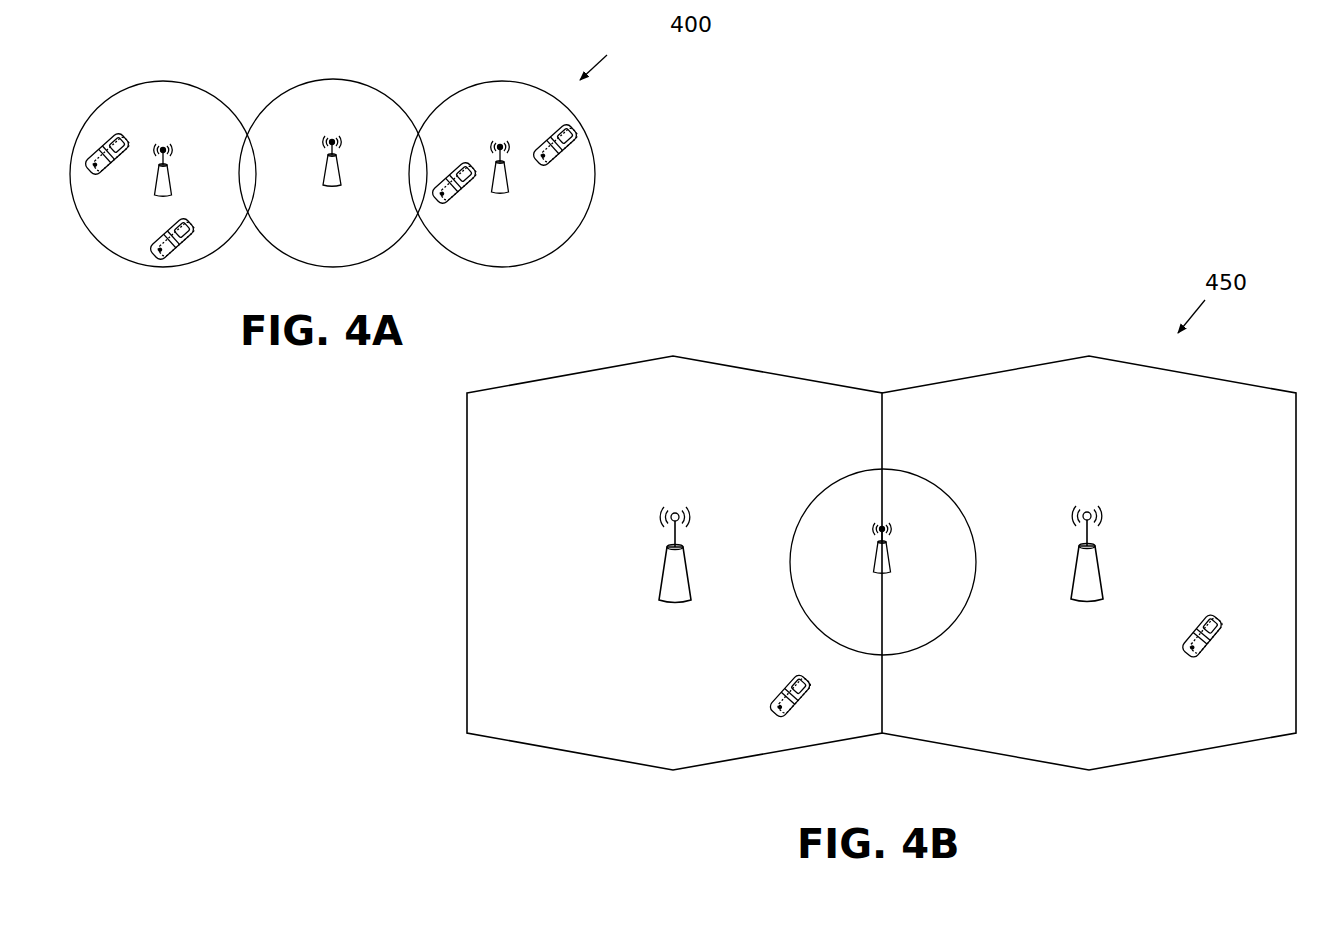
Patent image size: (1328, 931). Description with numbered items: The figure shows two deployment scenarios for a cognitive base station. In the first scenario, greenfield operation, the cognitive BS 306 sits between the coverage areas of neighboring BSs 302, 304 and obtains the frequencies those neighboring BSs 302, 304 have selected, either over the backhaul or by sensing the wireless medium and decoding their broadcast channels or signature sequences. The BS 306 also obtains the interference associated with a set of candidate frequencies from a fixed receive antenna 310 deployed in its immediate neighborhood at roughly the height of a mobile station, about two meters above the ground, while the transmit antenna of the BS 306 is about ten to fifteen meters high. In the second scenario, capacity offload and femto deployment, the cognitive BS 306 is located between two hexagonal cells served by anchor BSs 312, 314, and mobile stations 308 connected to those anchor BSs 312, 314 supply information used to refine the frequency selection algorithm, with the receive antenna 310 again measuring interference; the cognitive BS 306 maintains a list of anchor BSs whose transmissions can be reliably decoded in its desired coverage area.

In FIG. 4A, the neighboring base station 302 is at (163, 128).
In FIG. 4A, the neighboring base station 304 is at (502, 128).
In FIG. 4A, the cognitive base station 306 is at (330, 128).
In FIG. 4B, the cognitive base station 306 is at (877, 515).
In FIG. 4A, the mobile station 308 is at (331, 208).
In FIG. 4B, the mobile station 308 is at (804, 678).
In FIG. 4A, the receive antenna 310 is at (350, 214).
In FIG. 4B, the receive antenna 310 is at (903, 586).
In FIG. 4B, the anchor base station 312 is at (669, 502).
In FIG. 4B, the anchor base station 314 is at (1082, 502).